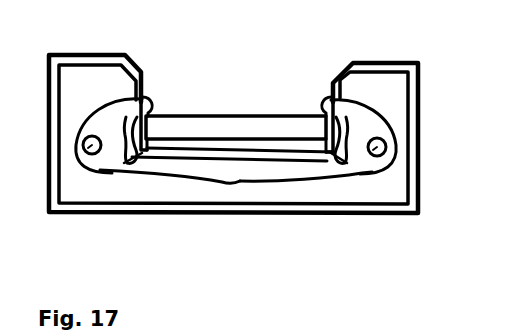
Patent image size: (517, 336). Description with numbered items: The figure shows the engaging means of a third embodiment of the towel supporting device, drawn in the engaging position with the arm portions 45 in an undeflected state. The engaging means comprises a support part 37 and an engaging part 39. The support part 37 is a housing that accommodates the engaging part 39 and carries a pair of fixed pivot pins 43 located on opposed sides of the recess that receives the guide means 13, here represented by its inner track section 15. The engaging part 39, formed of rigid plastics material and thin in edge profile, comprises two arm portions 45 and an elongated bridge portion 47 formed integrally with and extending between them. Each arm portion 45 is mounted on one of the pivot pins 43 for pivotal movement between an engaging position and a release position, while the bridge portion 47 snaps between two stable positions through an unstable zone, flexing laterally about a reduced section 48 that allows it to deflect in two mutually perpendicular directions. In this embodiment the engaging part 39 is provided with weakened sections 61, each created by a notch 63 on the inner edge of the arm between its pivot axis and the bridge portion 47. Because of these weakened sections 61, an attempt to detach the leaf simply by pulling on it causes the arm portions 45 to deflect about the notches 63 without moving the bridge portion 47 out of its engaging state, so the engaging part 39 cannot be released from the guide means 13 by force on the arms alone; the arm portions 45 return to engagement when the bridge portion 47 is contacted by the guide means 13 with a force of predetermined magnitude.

The guide means 13 is at (211, 108).
The inner track section 15 is at (261, 108).
The support part 37 is at (420, 110).
The engaging part 39 is at (324, 180).
The pivot pins 43 is at (86, 147).
The arm portions 45 is at (150, 105).
The bridge portion 47 is at (167, 167).
The reduced section 48 is at (233, 181).
The weakened sections 61 is at (117, 167).
The notch 63 is at (183, 110).